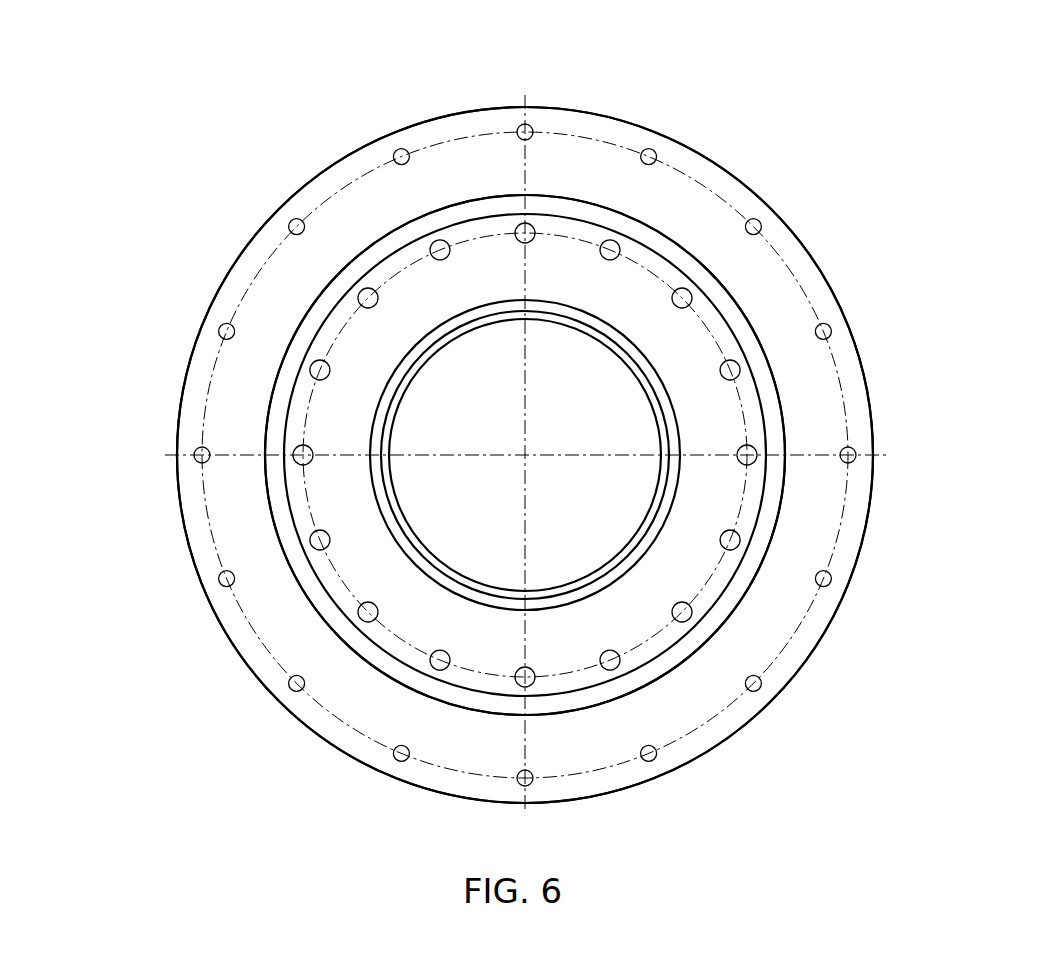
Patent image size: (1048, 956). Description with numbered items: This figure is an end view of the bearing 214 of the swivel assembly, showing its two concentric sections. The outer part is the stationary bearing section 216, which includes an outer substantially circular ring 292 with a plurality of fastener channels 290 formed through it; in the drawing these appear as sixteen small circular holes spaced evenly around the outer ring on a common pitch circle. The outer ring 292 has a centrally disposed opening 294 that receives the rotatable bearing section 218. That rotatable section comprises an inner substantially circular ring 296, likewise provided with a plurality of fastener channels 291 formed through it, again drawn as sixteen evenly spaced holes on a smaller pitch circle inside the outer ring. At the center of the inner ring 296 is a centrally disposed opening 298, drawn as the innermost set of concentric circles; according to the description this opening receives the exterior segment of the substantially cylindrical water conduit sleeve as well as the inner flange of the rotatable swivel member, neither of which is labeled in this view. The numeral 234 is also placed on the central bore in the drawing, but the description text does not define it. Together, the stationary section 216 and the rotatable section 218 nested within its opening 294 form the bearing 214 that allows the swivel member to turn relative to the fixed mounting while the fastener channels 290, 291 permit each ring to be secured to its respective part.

The bearing 214 is at (858, 218).
The stationary bearing section 216 is at (205, 308).
The rotatable bearing section 218 is at (345, 613).
The central bore 234 is at (608, 345).
The fastener channels 290 is at (397, 152).
The fastener channels 291 is at (747, 363).
The outer substantially circular ring 292 is at (803, 382).
The centrally disposed opening 294 is at (448, 692).
The inner substantially circular ring 296 is at (372, 350).
The centrally disposed opening 298 is at (462, 580).